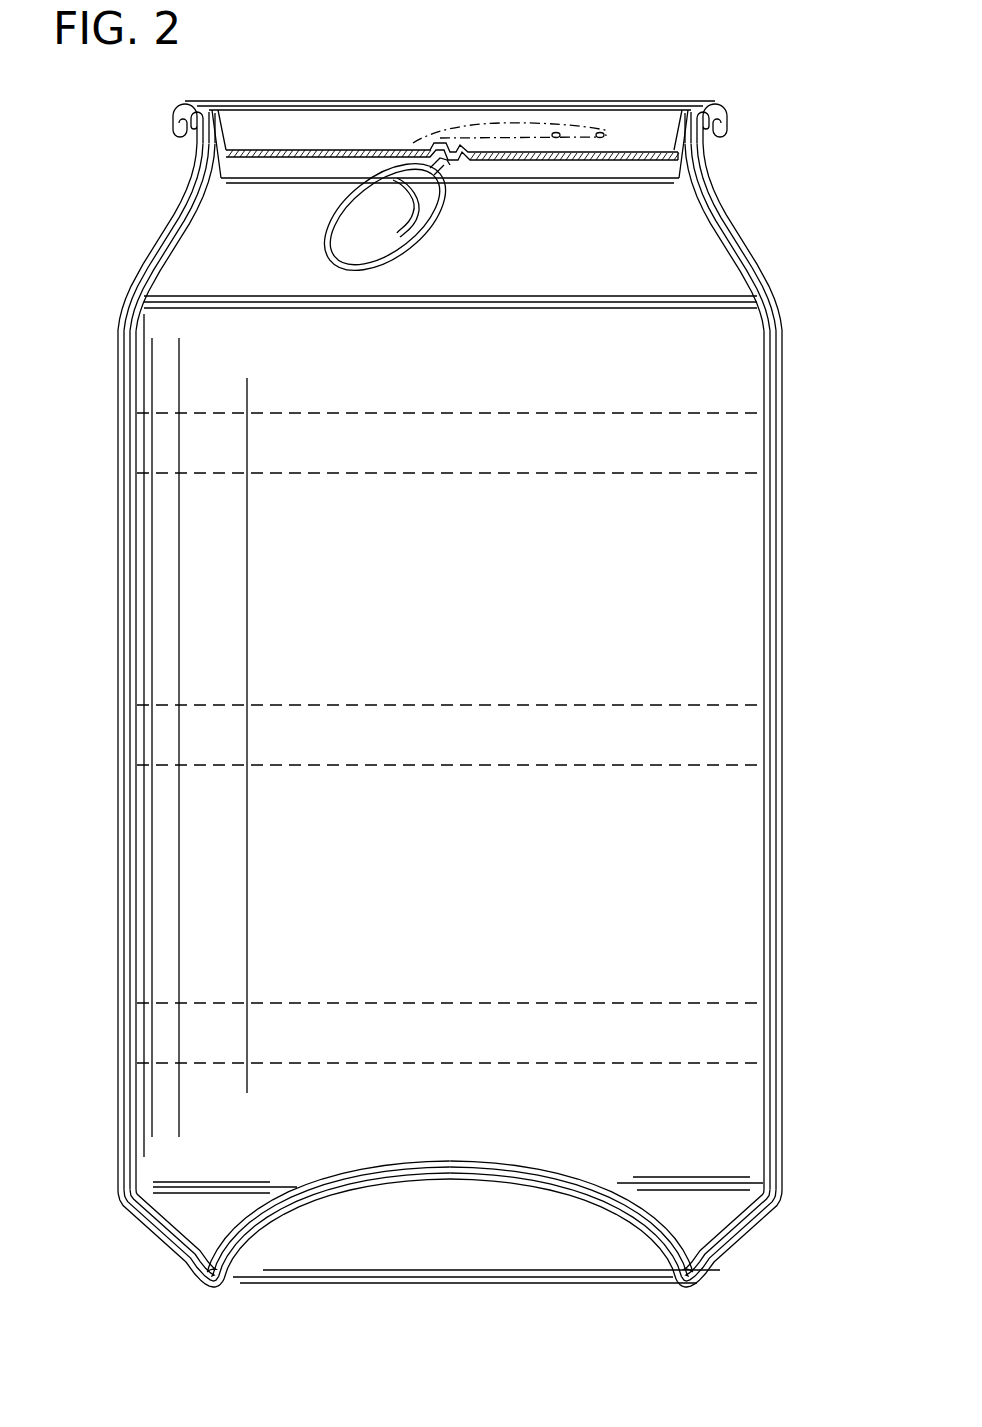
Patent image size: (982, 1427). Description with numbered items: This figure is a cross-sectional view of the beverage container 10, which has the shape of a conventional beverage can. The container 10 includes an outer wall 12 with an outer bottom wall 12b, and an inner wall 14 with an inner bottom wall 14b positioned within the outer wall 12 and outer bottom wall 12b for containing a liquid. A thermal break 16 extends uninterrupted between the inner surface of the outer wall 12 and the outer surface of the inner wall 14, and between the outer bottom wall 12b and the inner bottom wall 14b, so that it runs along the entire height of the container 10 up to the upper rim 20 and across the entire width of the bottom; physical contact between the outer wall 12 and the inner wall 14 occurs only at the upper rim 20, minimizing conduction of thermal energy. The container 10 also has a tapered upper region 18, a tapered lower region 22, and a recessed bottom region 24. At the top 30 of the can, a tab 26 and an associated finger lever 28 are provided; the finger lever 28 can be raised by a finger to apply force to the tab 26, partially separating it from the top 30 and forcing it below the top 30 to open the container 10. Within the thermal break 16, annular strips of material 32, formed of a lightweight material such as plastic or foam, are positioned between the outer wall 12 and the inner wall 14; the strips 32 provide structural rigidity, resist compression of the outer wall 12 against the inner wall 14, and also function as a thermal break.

The beverage container 10 is at (646, 72).
The outer wall 12 is at (120, 355).
The outer bottom wall 12b is at (355, 1190).
The inner wall 14 is at (152, 565).
The inner bottom wall 14b is at (386, 1162).
The thermal break 16 is at (128, 600).
The tapered upper region 18 is at (745, 205).
The upper rim 20 is at (150, 126).
The tapered lower region 22 is at (753, 1256).
The recessed bottom region 24 is at (532, 1235).
The tab 26 is at (322, 235).
The finger lever 28 is at (500, 127).
The top 30 is at (245, 150).
The annular strips of material 32 is at (126, 433).